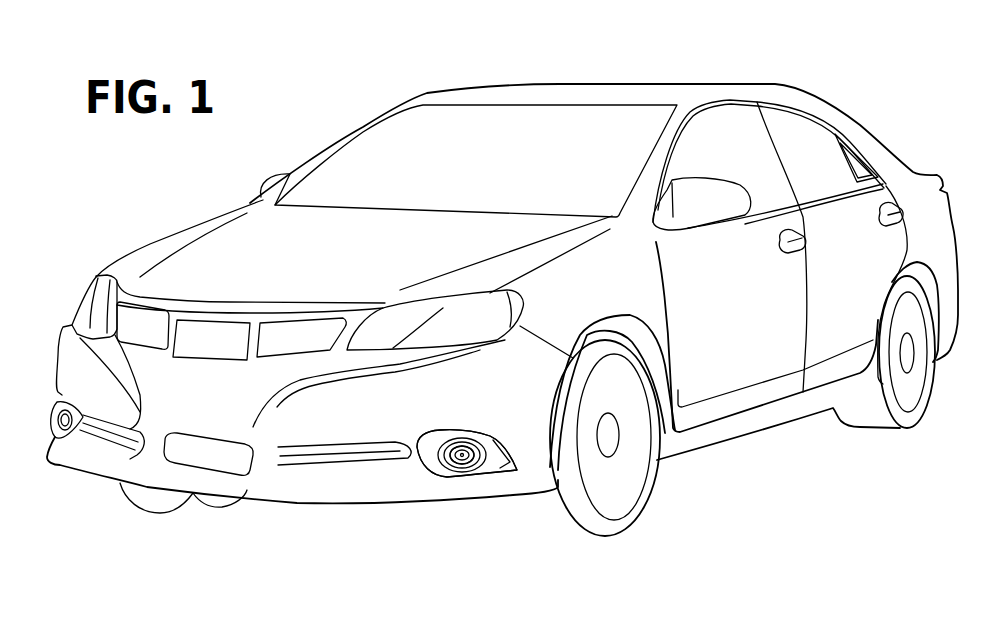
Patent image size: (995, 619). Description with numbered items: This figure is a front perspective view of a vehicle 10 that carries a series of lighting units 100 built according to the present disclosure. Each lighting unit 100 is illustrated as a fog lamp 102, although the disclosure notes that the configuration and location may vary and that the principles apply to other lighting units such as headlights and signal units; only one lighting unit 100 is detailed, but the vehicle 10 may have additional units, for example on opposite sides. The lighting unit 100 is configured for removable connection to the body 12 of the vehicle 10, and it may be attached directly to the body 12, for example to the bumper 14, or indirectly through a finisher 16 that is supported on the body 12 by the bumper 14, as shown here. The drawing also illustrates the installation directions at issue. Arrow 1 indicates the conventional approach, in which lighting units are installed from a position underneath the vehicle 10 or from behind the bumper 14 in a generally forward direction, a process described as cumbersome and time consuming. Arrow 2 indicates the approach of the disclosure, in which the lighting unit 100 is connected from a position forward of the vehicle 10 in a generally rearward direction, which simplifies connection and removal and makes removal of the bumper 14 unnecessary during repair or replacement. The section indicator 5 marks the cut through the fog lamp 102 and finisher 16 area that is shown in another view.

The vehicle 10 is at (502, 300).
The body 12 is at (520, 407).
The bumper 14 is at (297, 507).
The finisher 16 is at (453, 478).
The lighting unit 100 is at (483, 472).
The fog lamp 102 is at (478, 432).
The section line for FIG. 5 is at (397, 443).
The arrow 1 is at (203, 532).
The arrow 2 is at (157, 573).